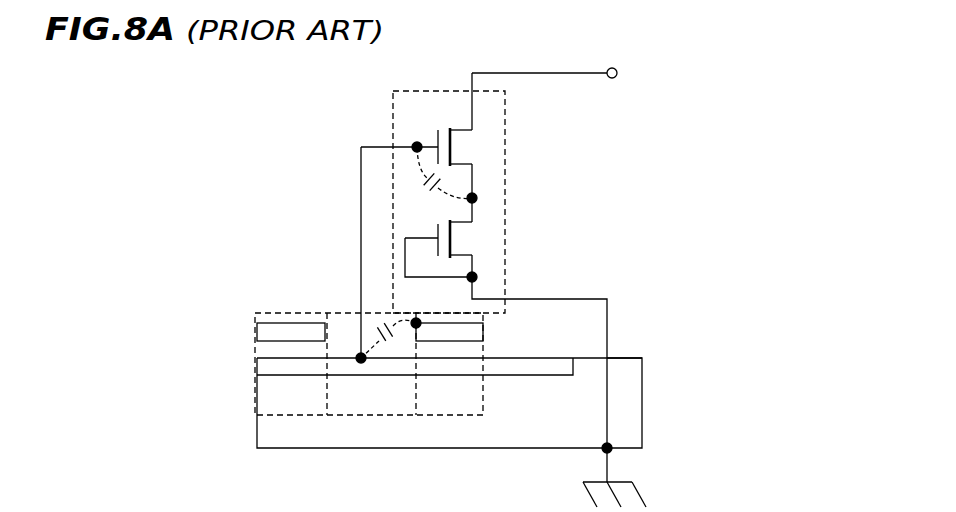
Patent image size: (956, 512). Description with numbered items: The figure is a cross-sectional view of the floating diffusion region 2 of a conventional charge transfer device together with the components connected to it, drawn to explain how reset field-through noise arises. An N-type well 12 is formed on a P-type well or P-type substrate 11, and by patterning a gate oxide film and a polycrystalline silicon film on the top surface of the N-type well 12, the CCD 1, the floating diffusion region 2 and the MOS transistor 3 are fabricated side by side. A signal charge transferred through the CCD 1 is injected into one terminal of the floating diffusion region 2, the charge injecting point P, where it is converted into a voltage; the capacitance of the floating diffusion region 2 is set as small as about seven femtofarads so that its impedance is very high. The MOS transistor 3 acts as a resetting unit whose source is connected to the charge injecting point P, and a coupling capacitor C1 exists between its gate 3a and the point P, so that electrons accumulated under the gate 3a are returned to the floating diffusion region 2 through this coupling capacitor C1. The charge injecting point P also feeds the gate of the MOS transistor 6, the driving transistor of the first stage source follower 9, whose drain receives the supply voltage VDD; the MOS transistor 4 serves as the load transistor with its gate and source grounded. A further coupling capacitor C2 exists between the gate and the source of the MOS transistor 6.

The CCD 1 is at (283, 418).
The floating diffusion region 2 is at (381, 418).
The MOS transistor 3 is at (455, 418).
The gate 3a is at (483, 333).
The MOS transistor 4 is at (460, 237).
The MOS transistor 6 is at (460, 147).
The first stage source follower 9 is at (406, 88).
The P-type well or P-type substrate 11 is at (642, 396).
The N-type well 12 is at (257, 365).
The charge injecting point P is at (360, 363).
The coupling capacitor C1 is at (377, 320).
The coupling capacitor C2 is at (439, 184).
The supply voltage VDD is at (640, 73).